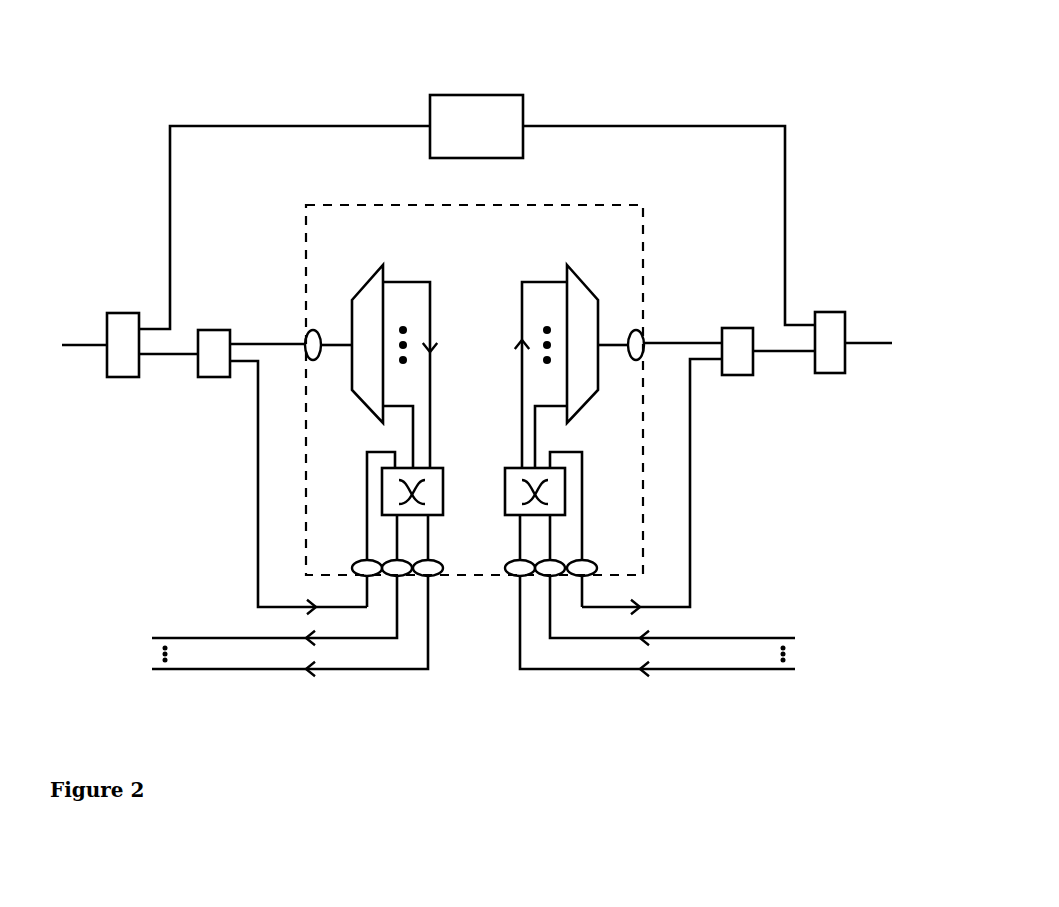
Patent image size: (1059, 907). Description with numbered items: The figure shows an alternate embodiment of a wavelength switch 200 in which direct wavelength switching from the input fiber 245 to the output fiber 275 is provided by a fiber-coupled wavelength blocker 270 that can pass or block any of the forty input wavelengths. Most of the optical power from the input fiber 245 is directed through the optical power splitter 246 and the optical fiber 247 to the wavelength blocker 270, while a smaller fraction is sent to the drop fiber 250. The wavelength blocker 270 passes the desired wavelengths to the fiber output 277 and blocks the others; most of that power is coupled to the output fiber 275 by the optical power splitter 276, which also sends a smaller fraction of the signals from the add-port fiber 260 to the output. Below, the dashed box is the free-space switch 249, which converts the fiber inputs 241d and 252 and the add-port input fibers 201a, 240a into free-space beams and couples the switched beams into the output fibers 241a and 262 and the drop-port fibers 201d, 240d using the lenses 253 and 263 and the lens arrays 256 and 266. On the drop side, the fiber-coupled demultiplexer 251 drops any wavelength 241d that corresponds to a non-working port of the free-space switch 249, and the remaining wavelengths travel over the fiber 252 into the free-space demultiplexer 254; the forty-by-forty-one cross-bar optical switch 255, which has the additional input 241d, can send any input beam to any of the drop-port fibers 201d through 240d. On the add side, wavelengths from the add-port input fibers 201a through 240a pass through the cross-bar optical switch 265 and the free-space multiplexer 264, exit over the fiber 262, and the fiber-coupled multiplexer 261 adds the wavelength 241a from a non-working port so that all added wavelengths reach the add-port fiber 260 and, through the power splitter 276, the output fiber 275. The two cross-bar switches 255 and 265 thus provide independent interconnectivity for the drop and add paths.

The optical network node 200 is at (700, 82).
The wavelength blocker 270 is at (426, 93).
The optical fiber 247 is at (170, 217).
The fiber output 277 is at (787, 217).
The free-space switch 249 is at (327, 201).
The input fiber 245 is at (91, 334).
The optical power splitter 246 is at (125, 310).
The drop fiber 250 is at (163, 358).
The fiber-coupled demultiplexer 251 is at (200, 380).
The fiber 252 is at (269, 341).
The lens 253 is at (314, 361).
The free-space demultiplexer 254 is at (368, 279).
The cross-bar optical switch 255 is at (448, 483).
The lens array 256 is at (352, 565).
The free-space multiplexer 264 is at (585, 284).
The cross-bar optical switch 265 is at (497, 503).
The lens array 266 is at (599, 568).
The lens 263 is at (633, 361).
The fiber 262 is at (682, 341).
The fiber-coupled multiplexer 261 is at (750, 378).
The add-port fiber 260 is at (788, 358).
The optical power splitter 276 is at (829, 309).
The output fiber 275 is at (863, 334).
The drop-port wavelength 241d is at (256, 513).
The output optical fiber 241a is at (693, 511).
The drop-port fiber 201d is at (168, 632).
The drop-port fiber 240d is at (166, 676).
The add-port input fiber 201a is at (780, 632).
The add-port input fiber 240a is at (782, 676).